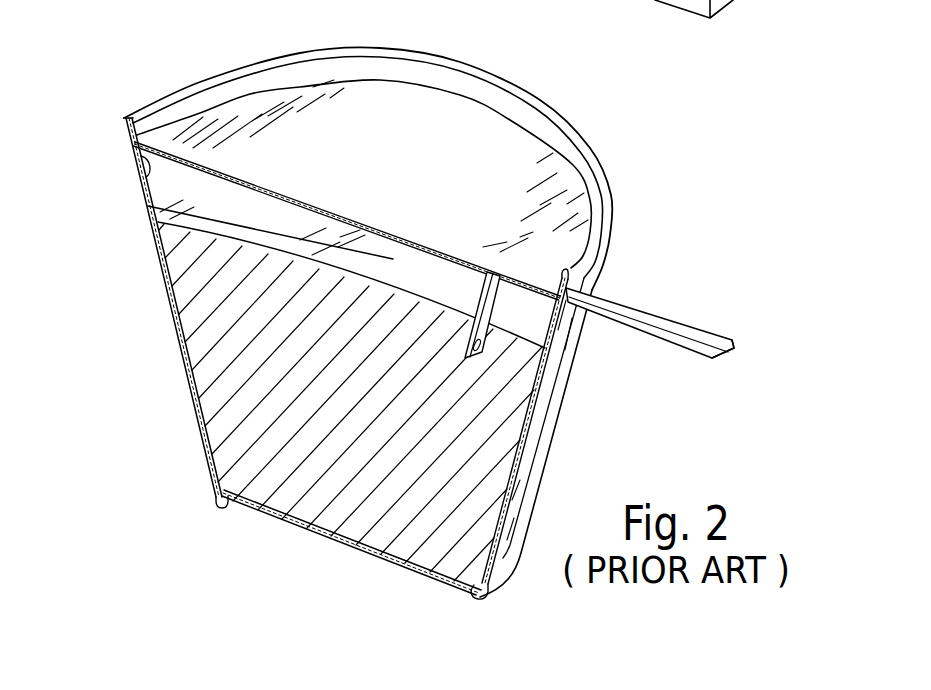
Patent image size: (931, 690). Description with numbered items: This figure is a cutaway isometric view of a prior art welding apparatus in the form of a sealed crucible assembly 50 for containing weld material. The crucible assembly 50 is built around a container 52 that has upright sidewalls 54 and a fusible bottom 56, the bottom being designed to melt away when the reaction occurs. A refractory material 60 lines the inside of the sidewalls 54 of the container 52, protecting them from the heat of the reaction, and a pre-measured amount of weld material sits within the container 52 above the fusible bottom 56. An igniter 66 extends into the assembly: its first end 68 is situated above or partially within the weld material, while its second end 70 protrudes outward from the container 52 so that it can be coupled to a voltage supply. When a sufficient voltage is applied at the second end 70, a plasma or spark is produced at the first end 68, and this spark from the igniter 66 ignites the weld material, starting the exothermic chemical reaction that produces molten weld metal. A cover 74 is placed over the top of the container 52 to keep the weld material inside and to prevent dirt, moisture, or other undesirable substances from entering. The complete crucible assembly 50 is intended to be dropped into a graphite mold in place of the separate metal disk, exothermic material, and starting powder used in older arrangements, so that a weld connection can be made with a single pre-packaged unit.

The crucible assembly 50 is at (145, 57).
The container 52 is at (122, 201).
The sidewalls 54 is at (150, 237).
The fusible bottom 56 is at (309, 522).
The refractory material 60 is at (142, 152).
The igniter 66 is at (651, 291).
The first end 68 is at (473, 358).
The second end 70 is at (713, 344).
The cover 74 is at (363, 92).